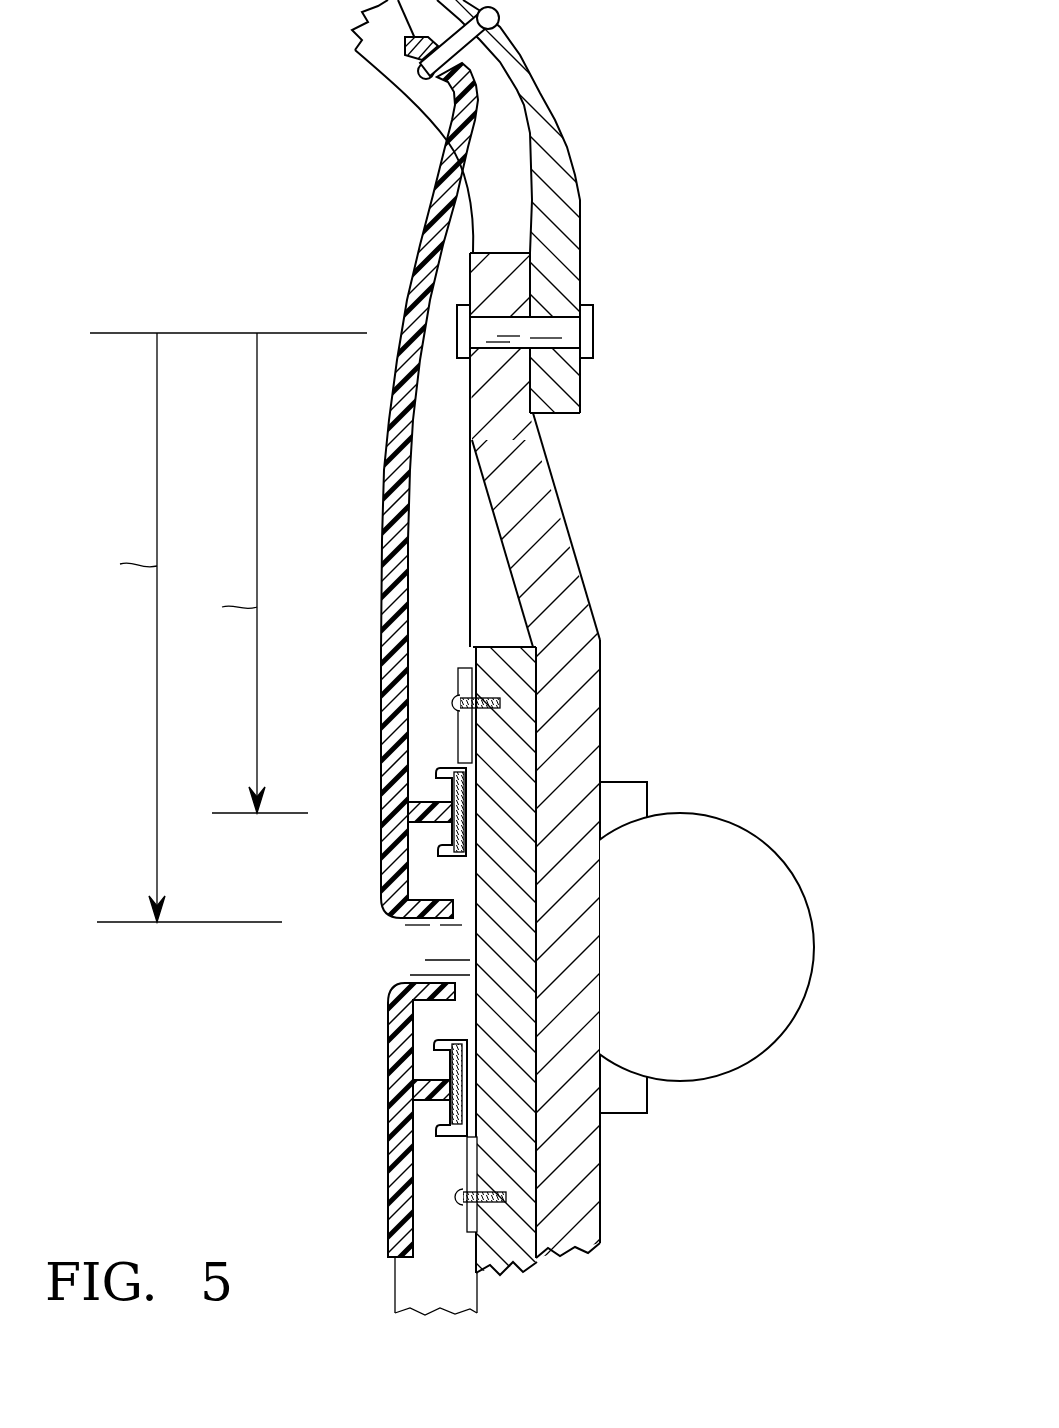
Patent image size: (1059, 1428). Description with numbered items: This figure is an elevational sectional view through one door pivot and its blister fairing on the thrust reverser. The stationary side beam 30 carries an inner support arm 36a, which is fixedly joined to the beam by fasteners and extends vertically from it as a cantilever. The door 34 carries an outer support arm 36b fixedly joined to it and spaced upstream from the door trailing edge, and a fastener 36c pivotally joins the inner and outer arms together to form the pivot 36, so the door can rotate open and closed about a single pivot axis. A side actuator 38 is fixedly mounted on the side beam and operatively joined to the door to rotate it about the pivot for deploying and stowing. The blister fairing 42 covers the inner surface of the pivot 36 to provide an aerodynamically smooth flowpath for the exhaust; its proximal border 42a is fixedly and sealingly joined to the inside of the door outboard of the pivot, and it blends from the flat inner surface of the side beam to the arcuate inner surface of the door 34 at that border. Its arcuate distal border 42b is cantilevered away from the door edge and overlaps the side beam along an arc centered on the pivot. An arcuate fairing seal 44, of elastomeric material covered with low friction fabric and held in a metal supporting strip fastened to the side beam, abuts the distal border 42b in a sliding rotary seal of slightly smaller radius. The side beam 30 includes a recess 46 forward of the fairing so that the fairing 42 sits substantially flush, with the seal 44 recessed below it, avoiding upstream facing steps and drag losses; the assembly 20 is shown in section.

The dimensional reference of assembly 20 is at (276, 884).
The side beam 30 is at (525, 1028).
The door 34 is at (537, 66).
The pivot 36 is at (602, 392).
The inner support arm 36a is at (562, 517).
The outer support arm 36b is at (575, 190).
The fastener 36c is at (553, 323).
The side actuator 38 is at (708, 964).
The blister fairing 42 is at (372, 446).
The proximal border 42a is at (445, 83).
The distal border 42b is at (385, 908).
The fairing seal 44 is at (430, 805).
The recess 46 is at (445, 956).